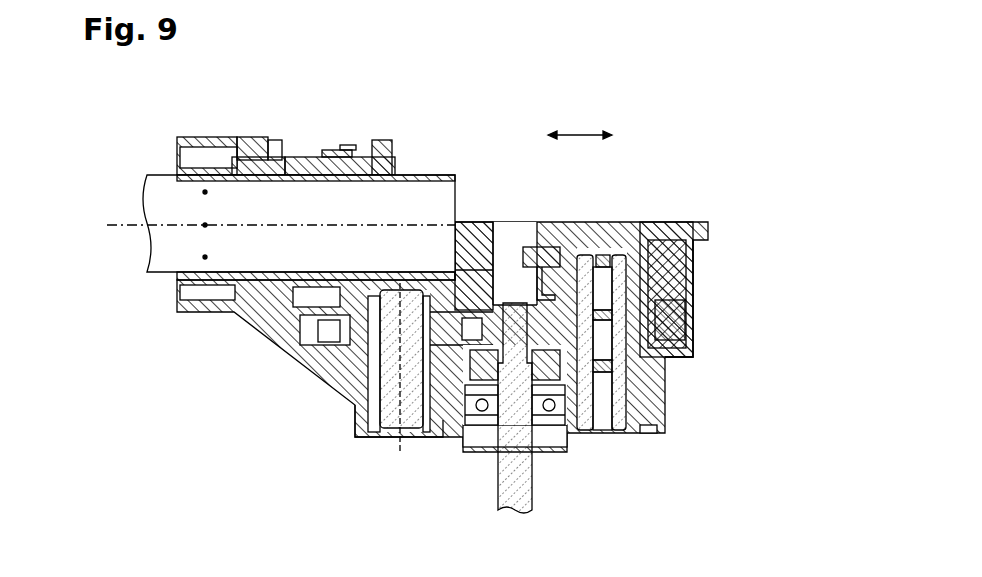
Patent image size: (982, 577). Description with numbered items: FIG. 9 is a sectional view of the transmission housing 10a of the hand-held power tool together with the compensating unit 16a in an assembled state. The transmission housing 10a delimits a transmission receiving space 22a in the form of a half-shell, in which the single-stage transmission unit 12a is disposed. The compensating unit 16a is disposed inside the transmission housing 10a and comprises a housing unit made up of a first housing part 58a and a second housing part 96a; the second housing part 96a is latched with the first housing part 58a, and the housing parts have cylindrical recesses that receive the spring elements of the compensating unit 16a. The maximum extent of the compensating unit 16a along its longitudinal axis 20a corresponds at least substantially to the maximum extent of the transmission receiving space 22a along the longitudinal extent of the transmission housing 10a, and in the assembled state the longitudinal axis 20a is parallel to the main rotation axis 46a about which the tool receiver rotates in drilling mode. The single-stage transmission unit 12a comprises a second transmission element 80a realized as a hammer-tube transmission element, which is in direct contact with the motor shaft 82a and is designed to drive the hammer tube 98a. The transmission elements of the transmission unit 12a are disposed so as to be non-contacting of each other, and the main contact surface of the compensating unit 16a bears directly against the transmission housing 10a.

The transmission housing 10a is at (695, 332).
The single-stage transmission unit 12a is at (645, 208).
The compensating unit 16a is at (480, 222).
The longitudinal axis 20a is at (583, 135).
The transmission receiving space 22a is at (620, 222).
The main rotation axis 46a is at (112, 222).
The first housing part 58a is at (530, 248).
The second transmission element 80a is at (338, 378).
The motor shaft 82a is at (500, 480).
The second housing part 96a is at (682, 222).
The hammer tube 98a is at (433, 172).